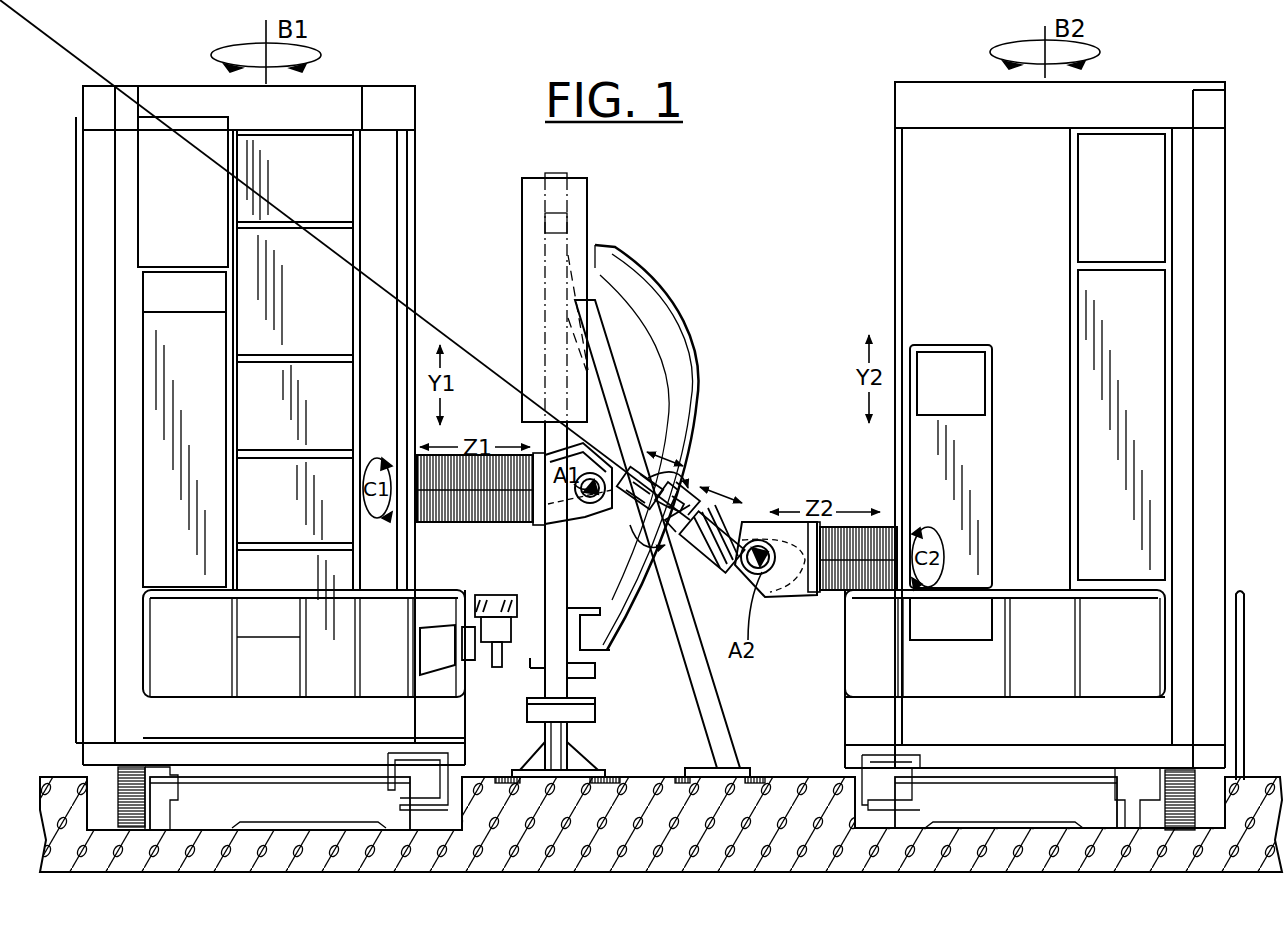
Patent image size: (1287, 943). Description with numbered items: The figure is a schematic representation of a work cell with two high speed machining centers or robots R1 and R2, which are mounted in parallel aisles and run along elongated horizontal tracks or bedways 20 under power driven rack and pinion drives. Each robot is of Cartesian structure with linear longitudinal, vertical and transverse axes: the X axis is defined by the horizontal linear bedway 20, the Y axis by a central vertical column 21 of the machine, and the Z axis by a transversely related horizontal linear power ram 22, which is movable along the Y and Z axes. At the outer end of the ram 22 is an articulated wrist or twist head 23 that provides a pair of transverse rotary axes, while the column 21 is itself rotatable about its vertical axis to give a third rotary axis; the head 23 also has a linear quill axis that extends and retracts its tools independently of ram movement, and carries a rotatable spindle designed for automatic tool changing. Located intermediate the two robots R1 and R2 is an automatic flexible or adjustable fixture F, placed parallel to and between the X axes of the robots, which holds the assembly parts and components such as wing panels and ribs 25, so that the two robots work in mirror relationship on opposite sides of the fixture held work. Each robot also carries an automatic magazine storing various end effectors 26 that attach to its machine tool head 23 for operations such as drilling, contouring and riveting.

The bedway 20 is at (308, 813).
The central vertical column 21 is at (74, 338).
The horizontal linear power ram 22 is at (466, 522).
The articulated wrist or twist head 23 is at (598, 530).
The assembly parts and components 25 is at (702, 378).
The end effector 26 is at (522, 614).
The automatic flexible fixture F is at (592, 197).
The first robot R1 is at (422, 167).
The second robot R2 is at (893, 152).